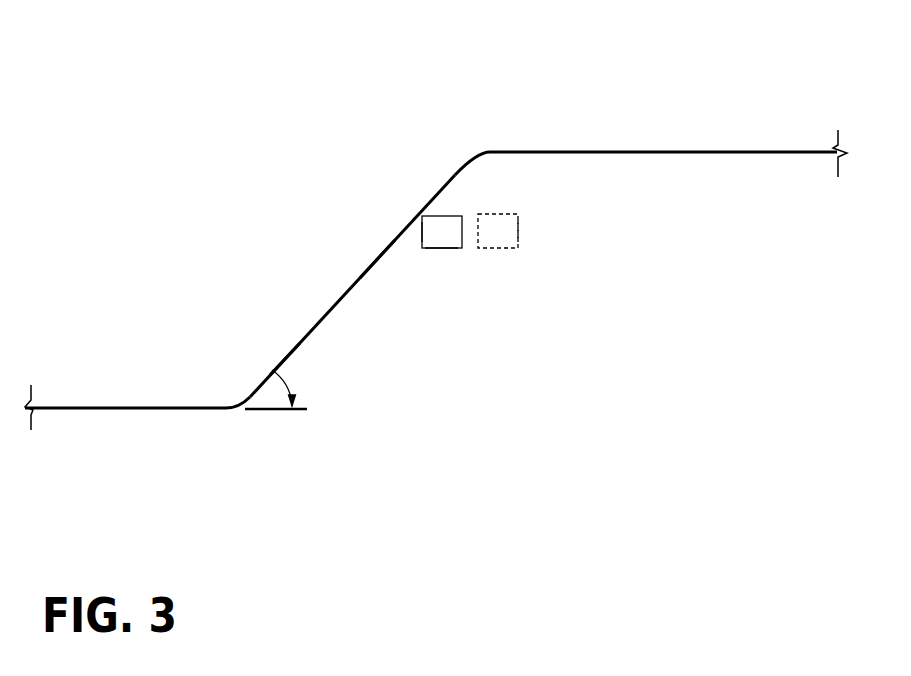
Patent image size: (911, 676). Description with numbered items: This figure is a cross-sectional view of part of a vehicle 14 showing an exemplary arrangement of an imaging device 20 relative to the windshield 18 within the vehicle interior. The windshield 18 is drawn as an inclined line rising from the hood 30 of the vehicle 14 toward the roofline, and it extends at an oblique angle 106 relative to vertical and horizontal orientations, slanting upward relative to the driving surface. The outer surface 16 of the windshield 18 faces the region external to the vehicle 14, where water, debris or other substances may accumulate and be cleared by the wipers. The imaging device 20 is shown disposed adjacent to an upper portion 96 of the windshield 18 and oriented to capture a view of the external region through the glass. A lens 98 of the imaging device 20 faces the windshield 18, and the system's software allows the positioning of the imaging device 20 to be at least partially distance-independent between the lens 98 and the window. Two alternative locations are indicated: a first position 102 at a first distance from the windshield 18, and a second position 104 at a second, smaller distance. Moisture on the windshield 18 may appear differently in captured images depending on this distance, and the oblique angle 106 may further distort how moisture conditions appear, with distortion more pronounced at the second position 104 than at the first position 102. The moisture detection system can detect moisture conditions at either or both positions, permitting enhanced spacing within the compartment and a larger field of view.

The vehicle 14 is at (695, 150).
The outer surface 16 is at (355, 275).
The windshield 18 is at (283, 341).
The imaging device 20 is at (448, 216).
The hood 30 is at (107, 407).
The upper portion 96 is at (366, 218).
The lens 98 is at (422, 228).
The first position 102 is at (525, 231).
The second position 104 is at (431, 252).
The oblique angle 106 is at (287, 382).